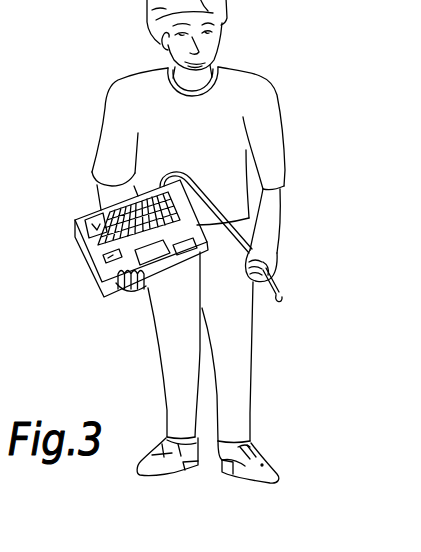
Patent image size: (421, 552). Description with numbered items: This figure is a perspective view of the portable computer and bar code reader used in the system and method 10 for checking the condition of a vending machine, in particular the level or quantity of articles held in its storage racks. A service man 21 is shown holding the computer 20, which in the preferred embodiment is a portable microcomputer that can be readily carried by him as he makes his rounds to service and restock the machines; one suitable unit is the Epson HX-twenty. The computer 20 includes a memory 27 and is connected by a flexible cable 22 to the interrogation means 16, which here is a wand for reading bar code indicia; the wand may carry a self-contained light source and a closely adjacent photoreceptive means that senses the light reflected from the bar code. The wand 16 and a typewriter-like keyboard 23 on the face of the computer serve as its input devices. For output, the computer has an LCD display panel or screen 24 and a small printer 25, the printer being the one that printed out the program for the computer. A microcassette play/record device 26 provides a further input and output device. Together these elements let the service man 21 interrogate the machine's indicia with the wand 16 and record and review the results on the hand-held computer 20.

The system and method 10 is at (169, 246).
The interrogation means 16 is at (270, 278).
The computer 20 is at (86, 254).
The service man 21 is at (263, 126).
The flexible cable 22 is at (212, 197).
The keyboard 23 is at (117, 213).
The LCD display panel 24 is at (158, 255).
The printer 25 is at (191, 244).
The microcassette play/record device 26 is at (100, 265).
The memory 27 is at (75, 228).